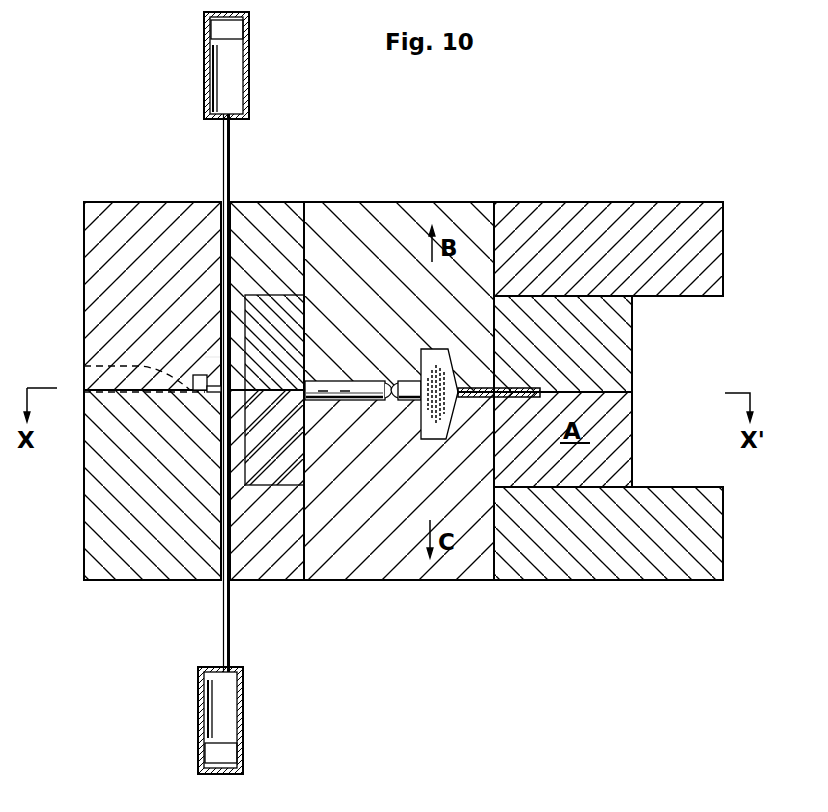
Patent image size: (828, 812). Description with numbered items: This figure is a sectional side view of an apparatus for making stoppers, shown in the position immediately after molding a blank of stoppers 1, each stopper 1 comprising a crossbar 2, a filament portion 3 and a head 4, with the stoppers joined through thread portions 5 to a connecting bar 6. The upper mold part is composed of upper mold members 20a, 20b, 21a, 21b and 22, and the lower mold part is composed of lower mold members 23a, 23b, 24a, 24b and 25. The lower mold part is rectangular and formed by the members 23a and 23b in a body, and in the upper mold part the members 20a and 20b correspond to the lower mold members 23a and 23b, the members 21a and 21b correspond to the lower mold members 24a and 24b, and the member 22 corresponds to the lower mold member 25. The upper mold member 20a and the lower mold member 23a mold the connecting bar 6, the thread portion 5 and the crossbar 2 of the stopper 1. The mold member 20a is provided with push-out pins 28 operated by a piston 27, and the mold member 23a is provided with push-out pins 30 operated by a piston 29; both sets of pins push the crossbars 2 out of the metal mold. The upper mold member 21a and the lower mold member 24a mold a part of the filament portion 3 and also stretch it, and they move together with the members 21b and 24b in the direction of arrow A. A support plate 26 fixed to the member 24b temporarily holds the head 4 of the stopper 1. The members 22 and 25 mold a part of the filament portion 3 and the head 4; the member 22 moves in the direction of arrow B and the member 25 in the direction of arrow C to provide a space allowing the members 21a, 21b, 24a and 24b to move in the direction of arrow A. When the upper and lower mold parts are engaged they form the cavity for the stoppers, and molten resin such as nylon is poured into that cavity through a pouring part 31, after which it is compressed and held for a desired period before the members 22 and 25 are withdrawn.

The stopper 1 is at (322, 378).
The crossbar 2 is at (220, 365).
The filament portion 3 is at (360, 392).
The head 4 is at (440, 362).
The thread portion 5 is at (209, 394).
The connecting bar 6 is at (194, 394).
The upper mold member 20a is at (112, 220).
The upper mold member 20b is at (640, 218).
The upper mold member 21a is at (281, 202).
The upper mold member 21b is at (538, 302).
The upper mold member 22 is at (386, 218).
The lower mold member 23a is at (125, 585).
The lower mold member 23b is at (640, 585).
The lower mold member 24a is at (280, 585).
The lower mold member 24b is at (538, 585).
The lower mold member 25 is at (372, 575).
The support plate 26 is at (535, 385).
The piston 27 is at (250, 65).
The push-out pins 28 is at (218, 180).
The piston 29 is at (243, 737).
The push-out pins 30 is at (218, 620).
The pouring part 31 is at (103, 382).